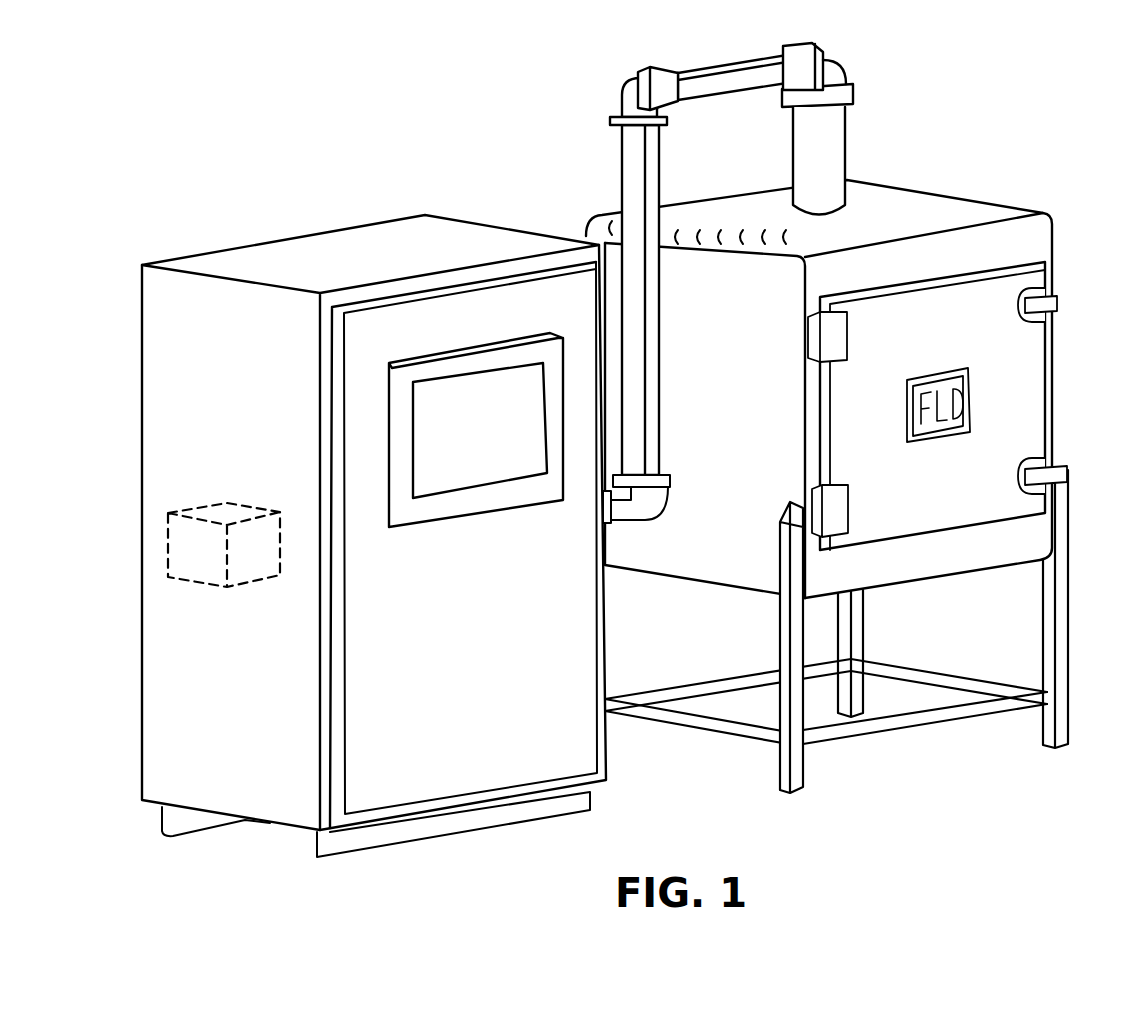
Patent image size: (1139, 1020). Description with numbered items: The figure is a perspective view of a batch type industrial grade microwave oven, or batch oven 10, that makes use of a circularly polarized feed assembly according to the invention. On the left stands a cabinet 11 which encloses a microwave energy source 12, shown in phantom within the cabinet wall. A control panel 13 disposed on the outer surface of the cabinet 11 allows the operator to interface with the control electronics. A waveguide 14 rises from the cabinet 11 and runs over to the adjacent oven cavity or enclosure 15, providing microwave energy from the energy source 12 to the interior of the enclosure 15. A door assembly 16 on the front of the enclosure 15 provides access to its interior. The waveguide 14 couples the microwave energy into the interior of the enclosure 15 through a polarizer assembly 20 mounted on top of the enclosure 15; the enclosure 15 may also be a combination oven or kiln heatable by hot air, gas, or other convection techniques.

The batch oven 10 is at (595, 450).
The cabinet 11 is at (344, 517).
The microwave energy source 12 is at (195, 548).
The control panel 13 is at (460, 438).
The waveguide 14 is at (621, 166).
The enclosure 15 is at (846, 476).
The door assembly 16 is at (1028, 378).
The polarizer assembly 20 is at (836, 143).